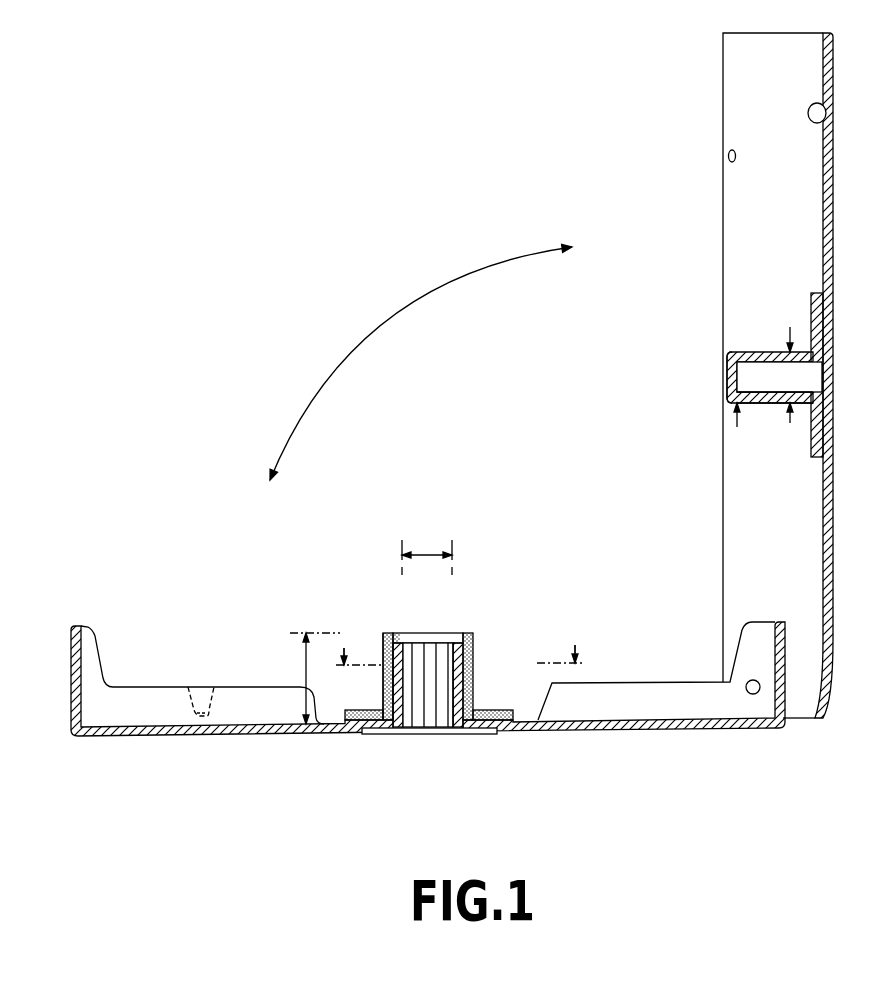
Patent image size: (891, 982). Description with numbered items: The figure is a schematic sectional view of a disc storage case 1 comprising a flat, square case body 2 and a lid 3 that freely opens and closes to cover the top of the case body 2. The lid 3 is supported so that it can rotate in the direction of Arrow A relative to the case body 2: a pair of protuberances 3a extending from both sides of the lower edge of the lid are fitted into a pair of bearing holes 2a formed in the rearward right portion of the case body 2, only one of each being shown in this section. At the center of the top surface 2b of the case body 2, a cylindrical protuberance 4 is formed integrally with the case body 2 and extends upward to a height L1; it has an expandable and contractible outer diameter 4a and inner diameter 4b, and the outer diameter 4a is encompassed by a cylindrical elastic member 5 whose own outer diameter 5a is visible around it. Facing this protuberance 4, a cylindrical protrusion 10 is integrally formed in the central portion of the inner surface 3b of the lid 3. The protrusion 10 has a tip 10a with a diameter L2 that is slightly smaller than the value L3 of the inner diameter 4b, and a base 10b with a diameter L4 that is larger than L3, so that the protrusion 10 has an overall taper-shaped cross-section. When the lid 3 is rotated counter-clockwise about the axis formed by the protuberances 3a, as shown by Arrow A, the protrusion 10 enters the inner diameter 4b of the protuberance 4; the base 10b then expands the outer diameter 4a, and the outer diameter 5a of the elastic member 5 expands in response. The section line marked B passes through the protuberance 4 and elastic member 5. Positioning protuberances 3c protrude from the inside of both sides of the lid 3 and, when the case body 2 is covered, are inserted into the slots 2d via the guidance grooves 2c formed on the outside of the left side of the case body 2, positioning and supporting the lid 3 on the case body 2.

The disc storage case 1 is at (277, 158).
The case body 2 is at (132, 695).
The bearing holes 2a is at (746, 686).
The top surface 2b is at (265, 725).
The guidance grooves 2c is at (190, 687).
The slots 2d is at (203, 720).
The lid 3 is at (738, 93).
The protuberances 3a is at (752, 695).
The inner surface 3b is at (827, 108).
The positioning protuberances 3c is at (730, 157).
The cylindrical protuberance 4 is at (440, 685).
The outer diameter 4a is at (467, 686).
The inner diameter 4b is at (438, 648).
The cylindrical elastic member 5 is at (473, 653).
The outer diameter of elastic member 5a is at (386, 655).
The cylindrical protrusion 10 is at (737, 352).
The tip 10a is at (727, 400).
The base 10b is at (807, 398).
The rotation direction A is at (398, 330).
The reference line B is at (460, 642).
The height L1 is at (305, 665).
The tip diameter L2 is at (737, 427).
The inner diameter value L3 is at (425, 555).
The base diameter L4 is at (790, 327).